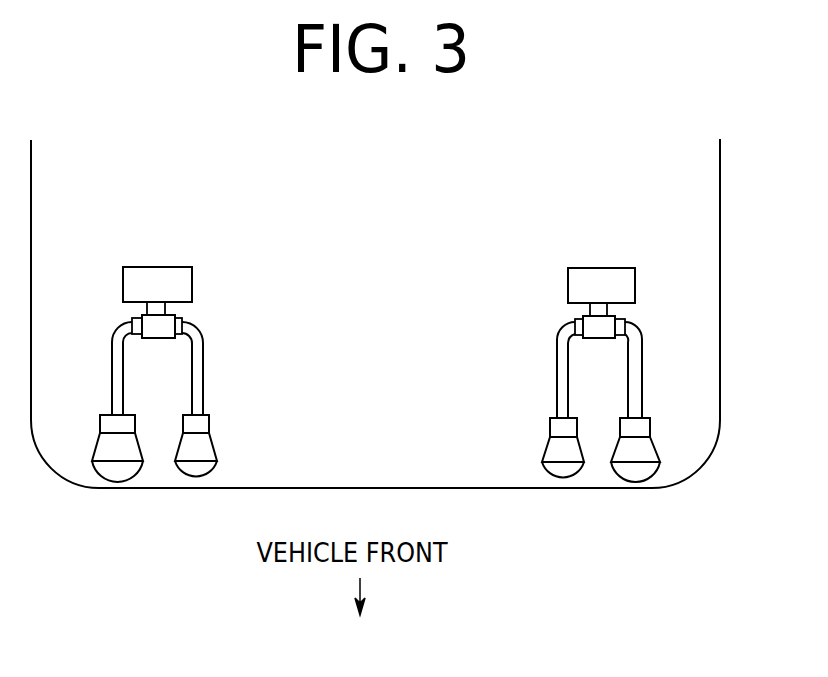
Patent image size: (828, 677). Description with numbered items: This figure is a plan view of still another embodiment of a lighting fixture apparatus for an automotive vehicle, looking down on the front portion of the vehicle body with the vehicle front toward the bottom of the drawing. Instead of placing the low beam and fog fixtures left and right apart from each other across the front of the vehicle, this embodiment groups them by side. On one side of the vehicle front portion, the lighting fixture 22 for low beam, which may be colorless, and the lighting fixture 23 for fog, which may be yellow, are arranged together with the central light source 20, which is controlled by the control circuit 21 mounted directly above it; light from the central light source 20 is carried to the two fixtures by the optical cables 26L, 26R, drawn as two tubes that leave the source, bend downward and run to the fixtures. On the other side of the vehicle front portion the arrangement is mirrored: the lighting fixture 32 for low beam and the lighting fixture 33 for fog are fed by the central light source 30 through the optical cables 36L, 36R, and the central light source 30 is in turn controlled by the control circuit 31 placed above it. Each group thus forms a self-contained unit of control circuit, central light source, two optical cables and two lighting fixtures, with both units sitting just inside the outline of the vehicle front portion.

The control circuit 21 is at (570, 273).
The central light source 20 is at (592, 320).
The optical cable 26L is at (557, 372).
The optical cable 26R is at (642, 372).
The lighting fixture for low beam 22 is at (636, 472).
The lighting fixture for fog 23 is at (563, 472).
The control circuit 31 is at (188, 272).
The central light source 30 is at (163, 321).
The optical cable 36R is at (112, 370).
The optical cable 36L is at (203, 370).
The lighting fixture for low beam 32 is at (120, 470).
The lighting fixture for fog 33 is at (200, 470).